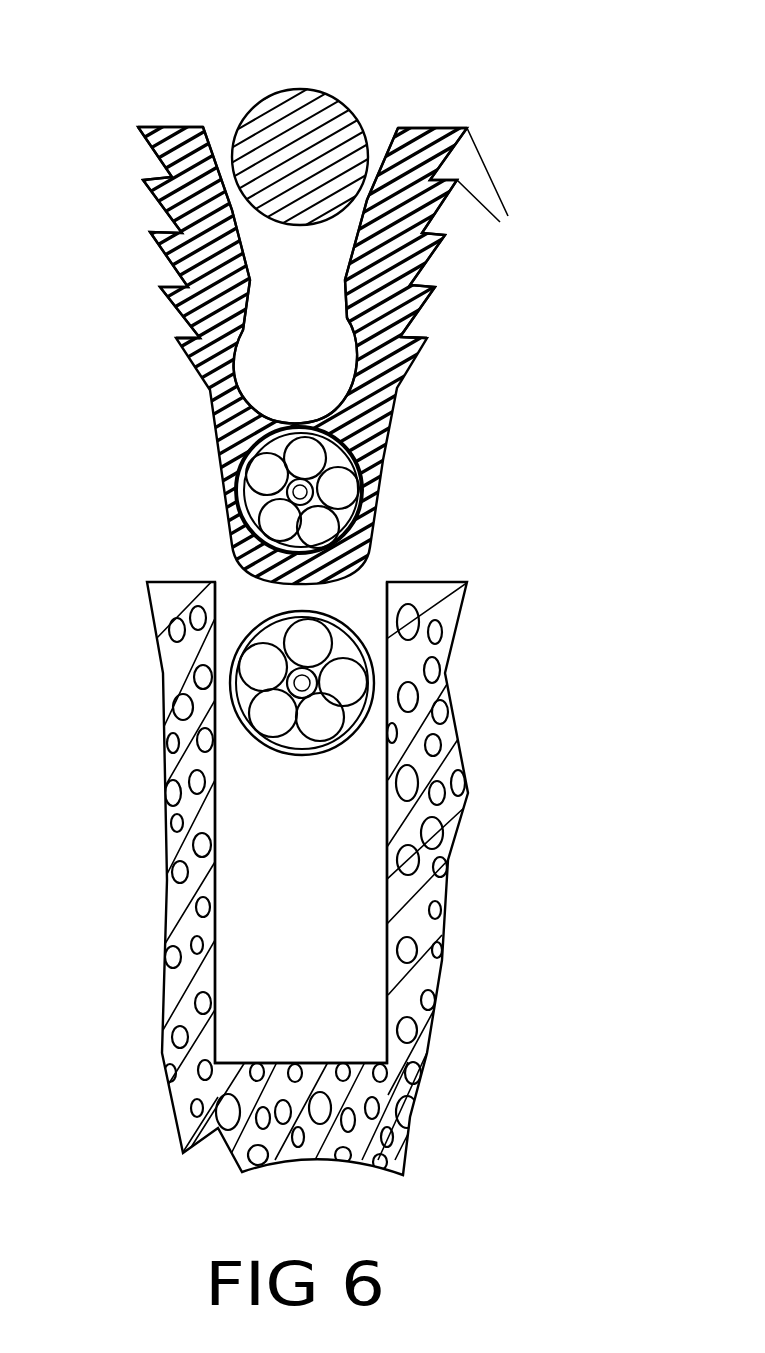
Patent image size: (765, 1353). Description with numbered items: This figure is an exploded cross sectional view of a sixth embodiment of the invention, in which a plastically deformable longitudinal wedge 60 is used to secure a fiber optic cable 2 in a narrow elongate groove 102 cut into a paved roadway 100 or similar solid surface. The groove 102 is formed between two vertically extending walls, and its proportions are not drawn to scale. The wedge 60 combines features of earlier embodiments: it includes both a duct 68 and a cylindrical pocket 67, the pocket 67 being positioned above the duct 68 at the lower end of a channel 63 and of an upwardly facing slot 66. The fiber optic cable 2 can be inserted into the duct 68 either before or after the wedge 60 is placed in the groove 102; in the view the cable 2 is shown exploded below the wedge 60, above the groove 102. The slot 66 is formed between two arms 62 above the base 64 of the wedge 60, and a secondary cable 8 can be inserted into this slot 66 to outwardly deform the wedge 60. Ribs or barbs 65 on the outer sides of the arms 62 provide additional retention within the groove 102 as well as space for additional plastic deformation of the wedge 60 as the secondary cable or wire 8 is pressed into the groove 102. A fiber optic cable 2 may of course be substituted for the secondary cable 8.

The fiber optic cable 2 is at (237, 487).
The secondary cable 8 is at (256, 81).
The wedge 60 is at (128, 112).
The arms 62 is at (200, 338).
The channel 63 is at (290, 282).
The base 64 is at (365, 497).
The ribs or barbs 65 is at (168, 329).
The upwardly facing slot 66 is at (382, 112).
The cylindrical pocket 67 is at (302, 392).
The duct 68 is at (375, 518).
The paved roadway 100 is at (428, 743).
The groove 102 is at (277, 1008).